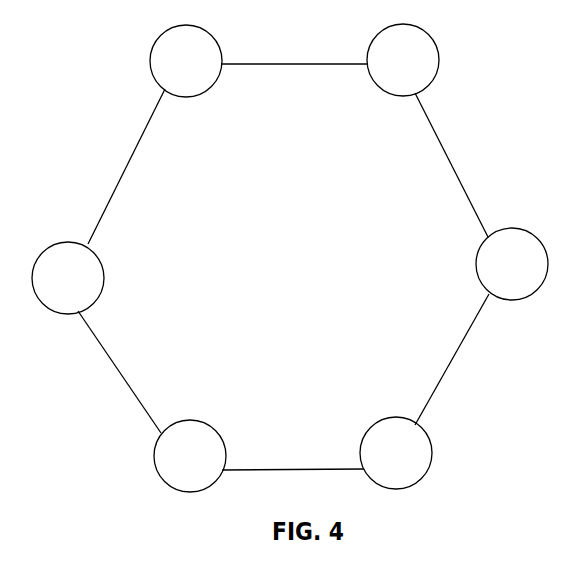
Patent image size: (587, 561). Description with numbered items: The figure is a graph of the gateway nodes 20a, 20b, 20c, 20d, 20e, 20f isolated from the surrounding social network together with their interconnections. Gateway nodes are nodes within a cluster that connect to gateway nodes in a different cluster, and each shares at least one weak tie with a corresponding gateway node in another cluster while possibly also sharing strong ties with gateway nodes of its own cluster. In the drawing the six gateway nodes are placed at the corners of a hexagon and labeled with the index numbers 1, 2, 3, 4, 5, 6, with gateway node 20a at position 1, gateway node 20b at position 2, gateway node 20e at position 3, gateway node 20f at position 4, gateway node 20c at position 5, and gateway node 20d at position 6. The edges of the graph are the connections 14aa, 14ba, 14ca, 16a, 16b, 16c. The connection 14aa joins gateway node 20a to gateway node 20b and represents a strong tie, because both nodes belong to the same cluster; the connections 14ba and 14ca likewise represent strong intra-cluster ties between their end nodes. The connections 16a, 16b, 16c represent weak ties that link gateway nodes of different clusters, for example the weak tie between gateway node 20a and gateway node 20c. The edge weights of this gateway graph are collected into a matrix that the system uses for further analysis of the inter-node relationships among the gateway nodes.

The gateway node 20a is at (164, 71).
The gateway node 20b is at (46, 288).
The gateway node 20c is at (381, 70).
The gateway node 20d is at (490, 274).
The gateway node 20e is at (168, 466).
The gateway node 20f is at (375, 463).
The connection 16a is at (303, 63).
The connection 16b is at (447, 363).
The connection 16c is at (115, 372).
The connection 14aa is at (122, 167).
The connection 14ba is at (453, 168).
The connection 14ca is at (298, 468).
The node position 1 is at (179, 61).
The node position 2 is at (58, 278).
The node position 3 is at (183, 462).
The node position 4 is at (399, 458).
The node position 5 is at (414, 60).
The node position 6 is at (522, 264).